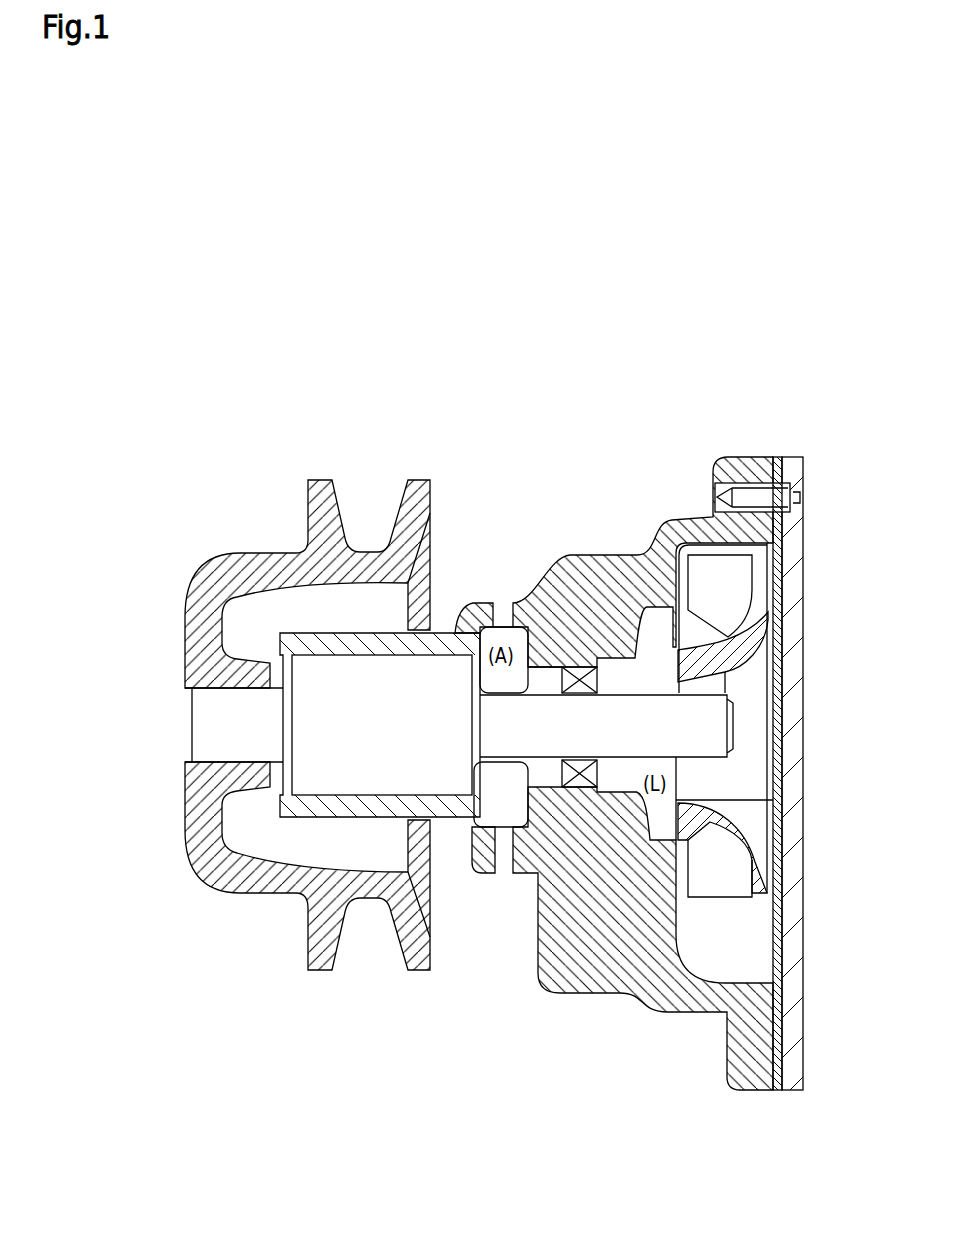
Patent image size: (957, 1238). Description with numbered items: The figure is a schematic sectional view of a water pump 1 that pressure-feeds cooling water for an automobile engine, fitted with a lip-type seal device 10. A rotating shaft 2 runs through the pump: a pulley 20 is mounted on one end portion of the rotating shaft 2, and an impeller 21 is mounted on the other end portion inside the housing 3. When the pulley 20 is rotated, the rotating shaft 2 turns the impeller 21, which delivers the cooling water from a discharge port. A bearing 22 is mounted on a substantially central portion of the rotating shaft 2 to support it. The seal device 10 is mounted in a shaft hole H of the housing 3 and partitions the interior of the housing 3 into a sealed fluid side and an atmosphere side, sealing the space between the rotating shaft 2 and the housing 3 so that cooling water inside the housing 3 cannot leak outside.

The water pump 1 is at (760, 400).
The rotating shaft 2 is at (623, 713).
The housing 3 is at (620, 970).
The seal device 10 is at (580, 658).
The pulley 20 is at (247, 883).
The impeller 21 is at (766, 818).
The bearing 22 is at (326, 725).
The shaft hole H is at (542, 773).